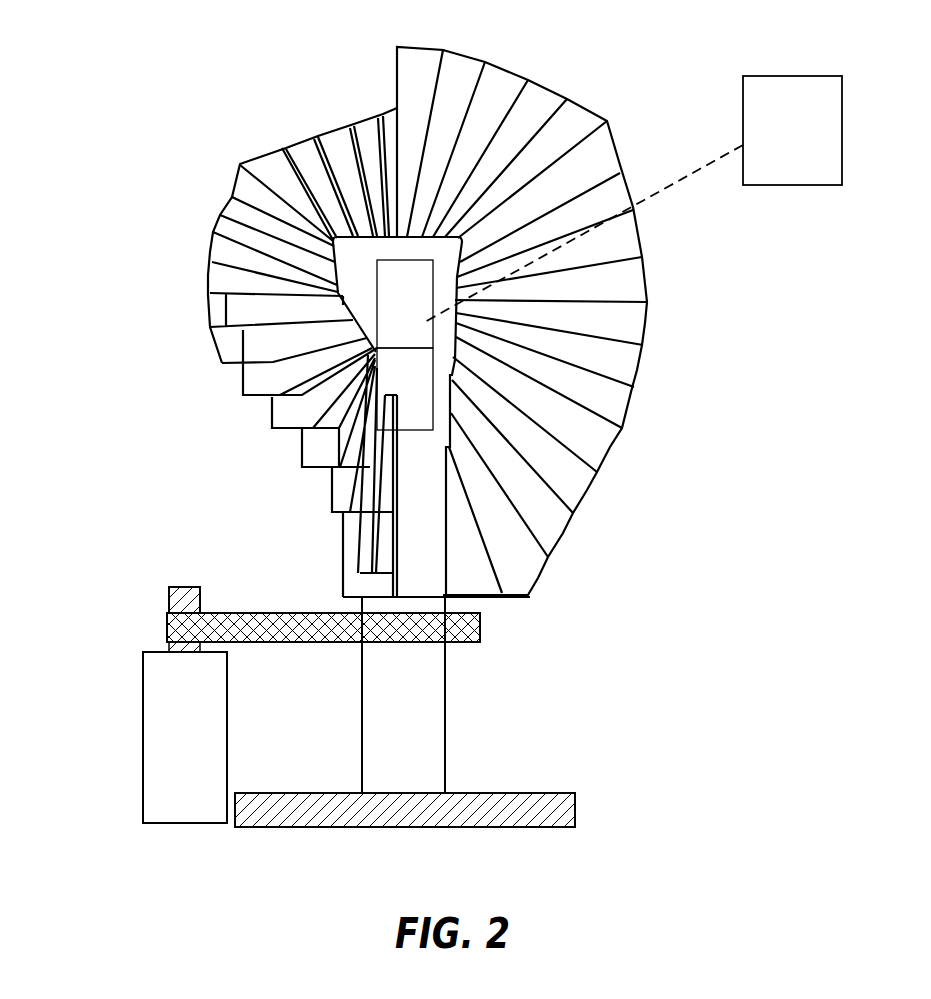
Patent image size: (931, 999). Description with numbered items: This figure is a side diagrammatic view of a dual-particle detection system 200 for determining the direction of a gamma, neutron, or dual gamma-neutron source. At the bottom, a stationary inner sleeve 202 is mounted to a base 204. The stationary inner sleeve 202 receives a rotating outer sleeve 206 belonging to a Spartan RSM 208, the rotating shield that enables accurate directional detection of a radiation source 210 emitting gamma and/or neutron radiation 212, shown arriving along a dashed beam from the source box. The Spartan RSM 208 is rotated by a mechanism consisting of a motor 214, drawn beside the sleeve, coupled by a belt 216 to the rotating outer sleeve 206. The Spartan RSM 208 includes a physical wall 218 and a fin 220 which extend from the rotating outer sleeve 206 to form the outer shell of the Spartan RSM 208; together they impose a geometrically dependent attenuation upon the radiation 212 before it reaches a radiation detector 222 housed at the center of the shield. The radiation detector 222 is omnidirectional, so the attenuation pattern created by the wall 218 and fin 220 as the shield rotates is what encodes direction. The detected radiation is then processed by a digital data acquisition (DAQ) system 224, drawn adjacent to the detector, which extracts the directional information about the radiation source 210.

The dual-particle detection system 200 is at (198, 216).
The stationary inner sleeve 202 is at (445, 782).
The base 204 is at (575, 811).
The rotating outer sleeve 206 is at (343, 560).
The Spartan RSM 208 is at (648, 283).
The radiation source 210 is at (625, 412).
The radiation 212 is at (678, 185).
The motor 214 is at (143, 760).
The belt 216 is at (480, 642).
The physical wall 218 is at (397, 83).
The fin 220 is at (208, 340).
The radiation detector 222 is at (405, 304).
The digital data acquisition (DAQ) system 224 is at (405, 389).